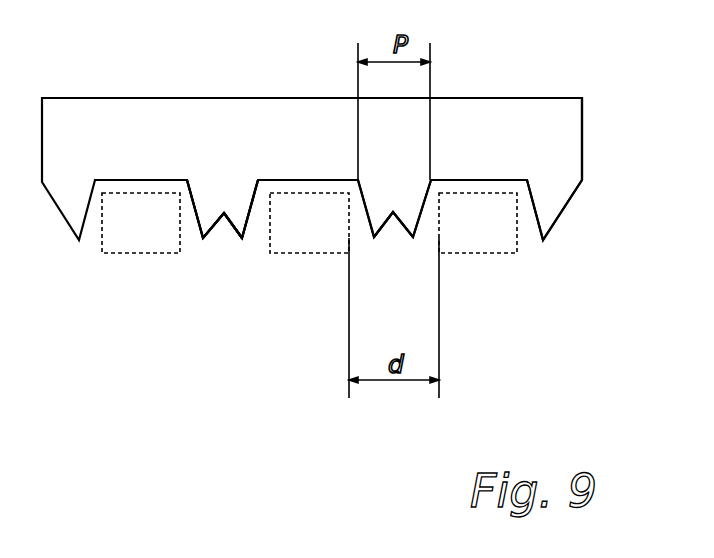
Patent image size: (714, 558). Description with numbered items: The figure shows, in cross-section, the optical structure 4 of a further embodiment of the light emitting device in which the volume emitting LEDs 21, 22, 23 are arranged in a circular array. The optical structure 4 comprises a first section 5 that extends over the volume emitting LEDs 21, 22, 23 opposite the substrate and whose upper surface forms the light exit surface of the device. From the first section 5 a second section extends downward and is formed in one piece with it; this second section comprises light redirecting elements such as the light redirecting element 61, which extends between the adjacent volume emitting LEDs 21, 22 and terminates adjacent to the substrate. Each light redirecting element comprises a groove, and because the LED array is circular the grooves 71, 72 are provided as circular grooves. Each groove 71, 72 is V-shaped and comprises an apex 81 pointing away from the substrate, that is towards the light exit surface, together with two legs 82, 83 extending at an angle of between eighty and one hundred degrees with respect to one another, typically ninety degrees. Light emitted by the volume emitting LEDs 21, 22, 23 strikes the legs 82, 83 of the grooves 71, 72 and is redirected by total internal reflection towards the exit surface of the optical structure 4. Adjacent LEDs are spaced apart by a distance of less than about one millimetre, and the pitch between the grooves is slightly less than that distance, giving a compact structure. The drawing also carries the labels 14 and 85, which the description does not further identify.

The optical structure 4 is at (489, 97).
The first section 5 is at (552, 140).
The end tooth flank 14 is at (555, 197).
The volume emitting LED 21 is at (142, 238).
The volume emitting LED 22 is at (311, 238).
The volume emitting LED 23 is at (487, 243).
The light redirecting element 61 is at (377, 216).
The groove 71 is at (225, 229).
The groove 72 is at (393, 238).
The apex 81 is at (224, 213).
The leg 82 is at (223, 212).
The leg 83 is at (233, 220).
The edge 85 is at (248, 223).